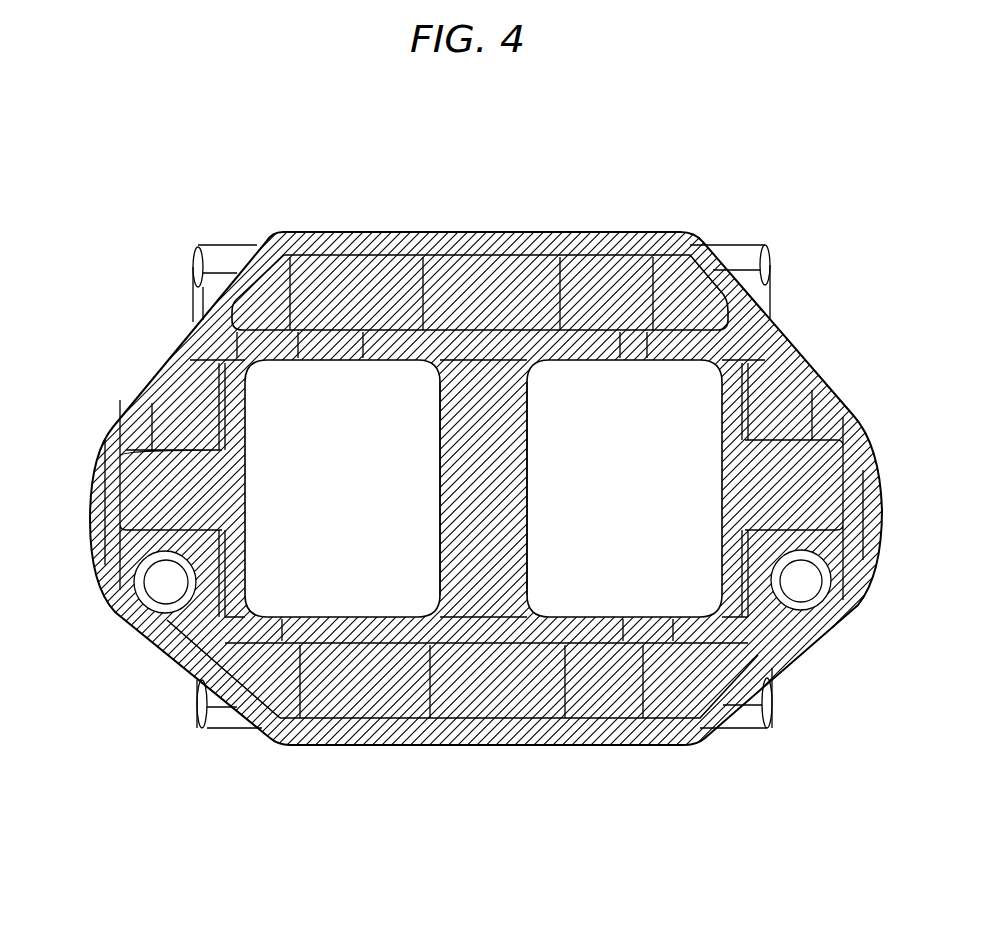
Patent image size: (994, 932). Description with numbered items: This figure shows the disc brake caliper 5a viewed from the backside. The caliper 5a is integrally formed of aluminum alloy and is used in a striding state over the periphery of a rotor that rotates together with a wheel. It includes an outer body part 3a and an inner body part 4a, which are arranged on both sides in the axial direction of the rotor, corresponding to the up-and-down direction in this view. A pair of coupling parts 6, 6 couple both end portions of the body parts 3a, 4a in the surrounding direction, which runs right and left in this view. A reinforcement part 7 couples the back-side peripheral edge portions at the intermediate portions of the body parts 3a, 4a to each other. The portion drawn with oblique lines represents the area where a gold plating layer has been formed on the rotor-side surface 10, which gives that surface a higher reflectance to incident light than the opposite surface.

The outer body part 3a is at (385, 278).
The inner body part 4a is at (494, 694).
The disc brake caliper 5a is at (812, 220).
The coupling part 6 is at (140, 512).
The reinforcement part 7 is at (492, 440).
The rotor-side surface 10 is at (485, 543).